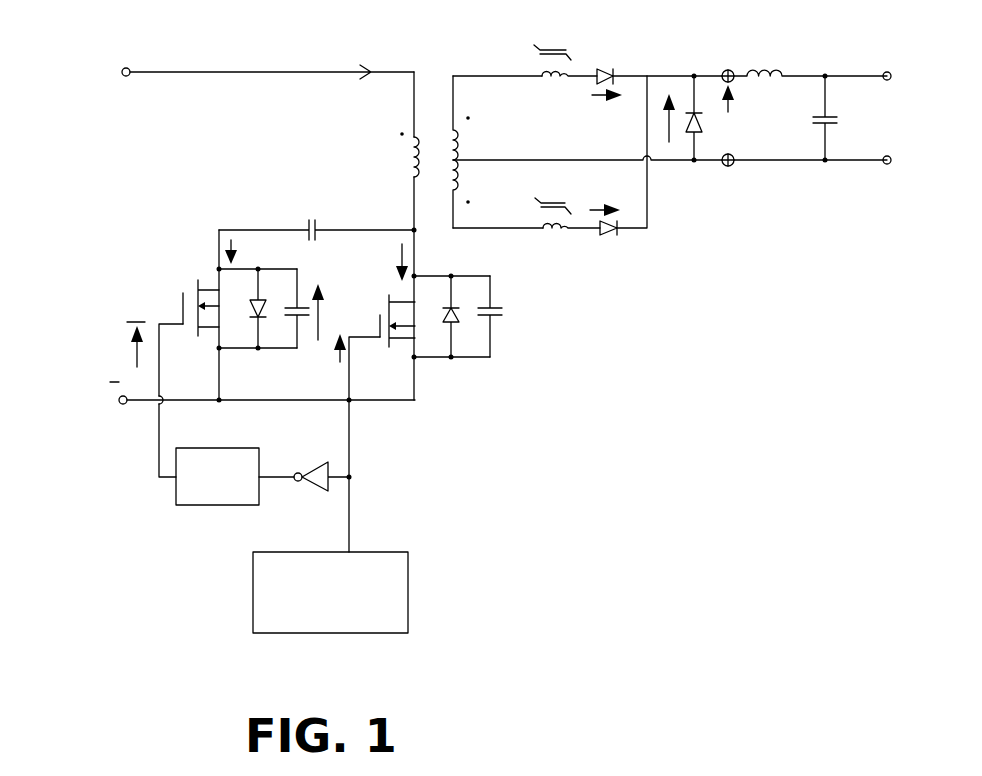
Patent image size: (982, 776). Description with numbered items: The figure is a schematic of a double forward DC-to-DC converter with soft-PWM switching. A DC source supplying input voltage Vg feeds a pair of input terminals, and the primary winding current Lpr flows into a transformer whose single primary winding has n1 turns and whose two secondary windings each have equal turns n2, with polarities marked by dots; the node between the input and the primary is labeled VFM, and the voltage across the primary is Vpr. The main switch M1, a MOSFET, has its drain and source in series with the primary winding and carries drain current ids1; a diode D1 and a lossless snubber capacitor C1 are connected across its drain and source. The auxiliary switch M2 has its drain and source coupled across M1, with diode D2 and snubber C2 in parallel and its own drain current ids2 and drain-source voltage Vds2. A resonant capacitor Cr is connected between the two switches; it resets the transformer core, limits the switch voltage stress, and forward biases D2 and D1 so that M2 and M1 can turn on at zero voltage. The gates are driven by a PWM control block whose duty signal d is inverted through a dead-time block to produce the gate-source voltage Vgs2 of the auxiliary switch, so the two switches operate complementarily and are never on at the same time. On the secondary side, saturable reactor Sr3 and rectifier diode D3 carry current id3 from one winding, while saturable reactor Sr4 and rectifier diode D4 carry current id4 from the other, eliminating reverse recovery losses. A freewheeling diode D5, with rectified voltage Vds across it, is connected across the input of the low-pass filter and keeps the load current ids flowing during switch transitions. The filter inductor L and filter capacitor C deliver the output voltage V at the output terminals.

The input DC voltage Vg is at (117, 236).
The primary winding current Lpr is at (272, 60).
The flux-mode voltage node VFM is at (431, 93).
The primary winding voltage Vpr is at (324, 127).
The primary winding turns n1 is at (399, 266).
The secondary winding turns n2 is at (587, 152).
The saturable reactor Sr3 is at (565, 47).
The rectifier diode D3 is at (659, 59).
The diode D3 current id3 is at (602, 108).
The saturable reactor Sr4 is at (567, 235).
The rectifier diode D4 is at (623, 174).
The diode D4 current id4 is at (601, 193).
The rectifier voltage Vds is at (667, 137).
The freewheeling diode D5 is at (724, 133).
The output inductor current ids is at (736, 112).
The filter inductor L is at (810, 102).
The filter capacitor C is at (834, 118).
The output voltage V is at (893, 118).
The resonant capacitor Cr is at (318, 216).
The switch M2 drain current ids2 is at (257, 252).
The switch M1 drain current ids1 is at (376, 257).
The auxiliary switch M2 is at (190, 353).
The diode D2 is at (258, 332).
The lossless snubber C2 is at (300, 332).
The drain-source voltage of M2 Vds2 is at (344, 312).
The main switch M1 is at (381, 423).
The diode D1 is at (451, 335).
The lossless snubber C1 is at (496, 336).
The gate-source voltage of M2 Vgs2 is at (338, 388).
The dead time dead-time is at (264, 476).
The PWM control PWM is at (330, 592).
The duty cycle control signal d is at (370, 532).